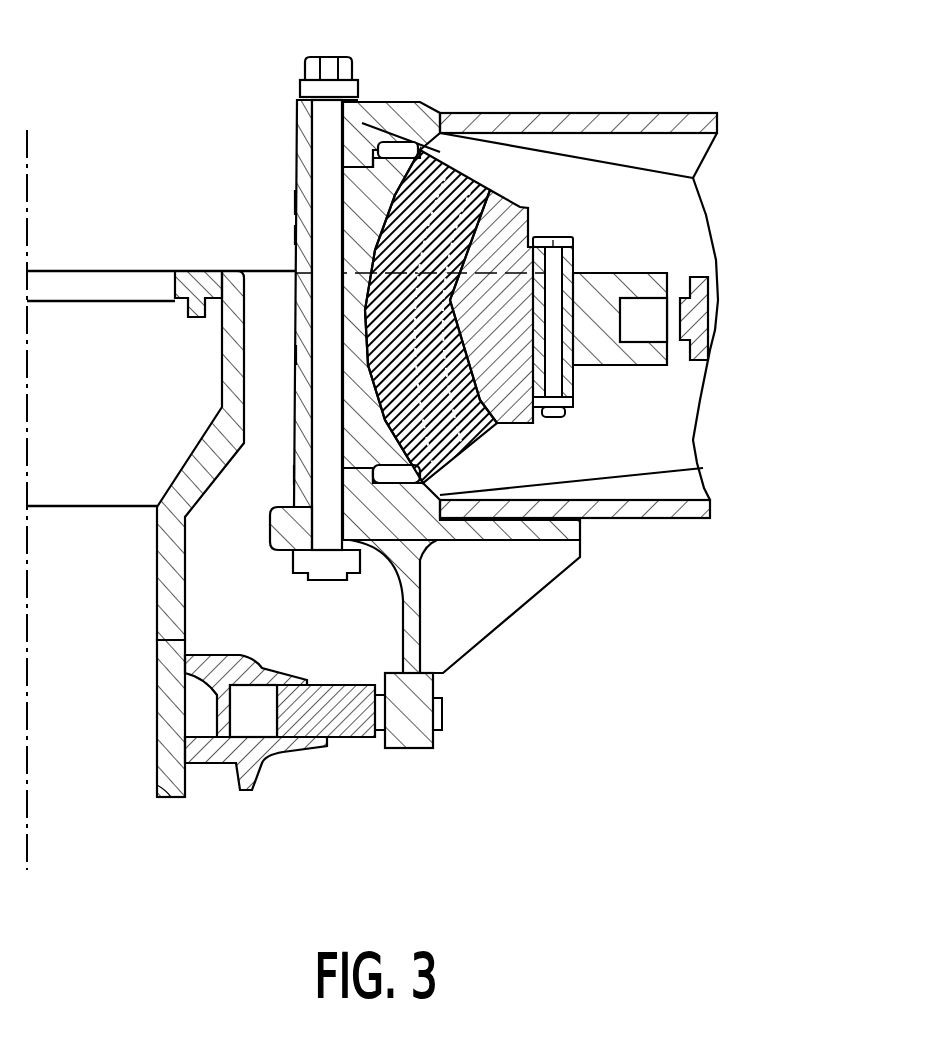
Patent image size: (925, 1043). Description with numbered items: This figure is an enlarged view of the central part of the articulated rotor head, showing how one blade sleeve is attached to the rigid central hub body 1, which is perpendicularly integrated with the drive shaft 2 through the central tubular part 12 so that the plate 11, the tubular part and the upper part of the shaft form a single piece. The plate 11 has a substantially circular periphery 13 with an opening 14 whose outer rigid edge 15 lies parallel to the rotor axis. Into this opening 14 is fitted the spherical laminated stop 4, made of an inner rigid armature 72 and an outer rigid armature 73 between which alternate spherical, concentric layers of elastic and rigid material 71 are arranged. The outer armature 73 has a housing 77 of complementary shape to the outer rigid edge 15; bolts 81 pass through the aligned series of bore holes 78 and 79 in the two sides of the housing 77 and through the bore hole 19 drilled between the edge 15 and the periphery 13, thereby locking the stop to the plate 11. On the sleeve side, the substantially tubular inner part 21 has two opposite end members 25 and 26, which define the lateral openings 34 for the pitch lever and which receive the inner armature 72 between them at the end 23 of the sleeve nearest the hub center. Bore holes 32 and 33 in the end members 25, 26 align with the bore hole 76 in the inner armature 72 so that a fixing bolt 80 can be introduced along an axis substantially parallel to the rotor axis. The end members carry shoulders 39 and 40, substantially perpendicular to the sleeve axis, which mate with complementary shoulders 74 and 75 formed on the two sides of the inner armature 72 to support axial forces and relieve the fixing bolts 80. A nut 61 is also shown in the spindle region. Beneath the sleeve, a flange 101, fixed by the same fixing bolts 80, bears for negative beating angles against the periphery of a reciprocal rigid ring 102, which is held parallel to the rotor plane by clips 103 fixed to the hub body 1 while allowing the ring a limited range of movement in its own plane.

The central hub body 1 is at (93, 342).
The drive shaft 2 is at (100, 763).
The spherical laminated stop 4 is at (293, 208).
The plate 11 is at (207, 271).
The central tubular part 12 is at (172, 603).
The periphery 13 is at (670, 273).
The opening 14 is at (232, 341).
The outer rigid edge 15 is at (575, 278).
The bore hole 19 is at (563, 343).
The inner part 21 is at (620, 130).
The end of hollow sleeve 23 is at (412, 101).
The end member 25 is at (297, 145).
The end member 26 is at (294, 473).
The bore hole 32 is at (308, 110).
The bore hole 33 is at (336, 580).
The lateral opening 34 is at (600, 470).
The shoulder 39 is at (370, 145).
The shoulder 40 is at (392, 487).
The nut 61 is at (712, 286).
The alternate layers of elastic and rigid material 71 is at (463, 248).
The inner rigid armature 72 is at (312, 354).
The outer rigid armature 73 is at (520, 250).
The shoulder 74 is at (440, 150).
The shoulder 75 is at (430, 548).
The bore hole 76 is at (297, 232).
The housing 77 is at (512, 425).
The bore hole 78 is at (556, 268).
The bore hole 79 is at (558, 355).
The fixing bolt 80 is at (330, 540).
The bolt 81 is at (563, 250).
The flange 101 is at (438, 684).
The reciprocal rigid ring 102 is at (333, 735).
The clip 103 is at (210, 672).